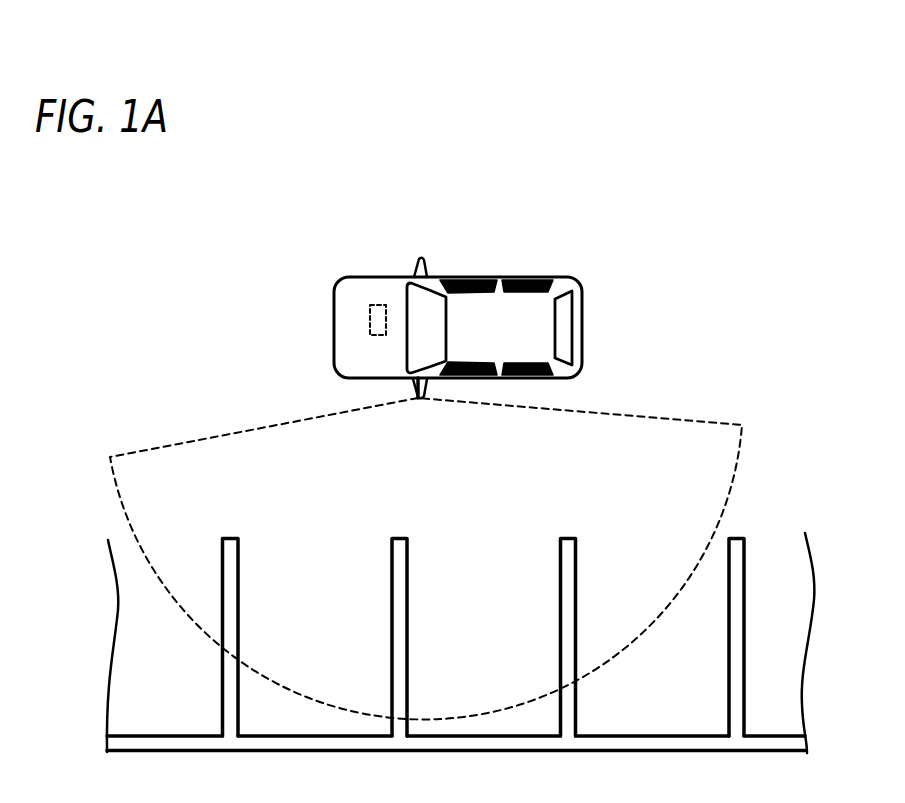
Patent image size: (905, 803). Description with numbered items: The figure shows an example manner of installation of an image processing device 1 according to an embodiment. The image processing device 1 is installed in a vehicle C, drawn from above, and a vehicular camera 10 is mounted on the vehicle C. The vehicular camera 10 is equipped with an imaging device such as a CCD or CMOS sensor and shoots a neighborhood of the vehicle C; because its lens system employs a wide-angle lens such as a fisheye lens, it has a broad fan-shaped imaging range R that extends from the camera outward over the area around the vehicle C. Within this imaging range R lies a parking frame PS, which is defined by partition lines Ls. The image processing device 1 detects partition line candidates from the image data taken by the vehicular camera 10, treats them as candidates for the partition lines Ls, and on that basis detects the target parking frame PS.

The image processing device 1 is at (380, 302).
The vehicle C is at (571, 277).
The vehicular camera 10 is at (419, 400).
The imaging range R is at (648, 415).
The partition lines Ls is at (405, 535).
The parking frame PS is at (460, 620).